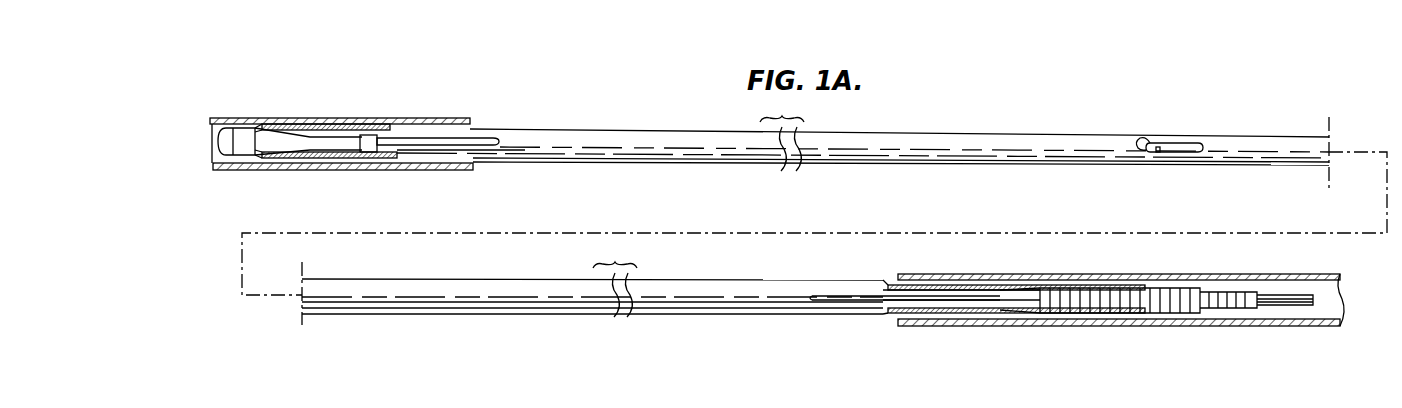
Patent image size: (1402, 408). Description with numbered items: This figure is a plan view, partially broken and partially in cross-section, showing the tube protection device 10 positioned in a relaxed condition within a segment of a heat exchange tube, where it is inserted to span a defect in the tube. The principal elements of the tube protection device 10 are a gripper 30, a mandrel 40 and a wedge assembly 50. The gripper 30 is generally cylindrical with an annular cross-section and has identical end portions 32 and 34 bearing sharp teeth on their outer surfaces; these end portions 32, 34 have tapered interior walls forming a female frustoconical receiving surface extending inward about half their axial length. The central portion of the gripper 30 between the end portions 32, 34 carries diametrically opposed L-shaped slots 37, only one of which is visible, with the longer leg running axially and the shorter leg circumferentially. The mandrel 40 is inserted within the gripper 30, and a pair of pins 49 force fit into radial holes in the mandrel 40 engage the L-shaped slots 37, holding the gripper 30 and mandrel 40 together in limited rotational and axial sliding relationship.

The tube protection device 10 is at (1015, 108).
The gripper 30 is at (657, 119).
The end portion 32 is at (323, 128).
The end portion 34 is at (1005, 320).
The L-shaped slot 37 is at (1185, 142).
The mandrel 40 is at (223, 127).
The pin 49 is at (1158, 153).
The wedge assembly 50 is at (1153, 316).